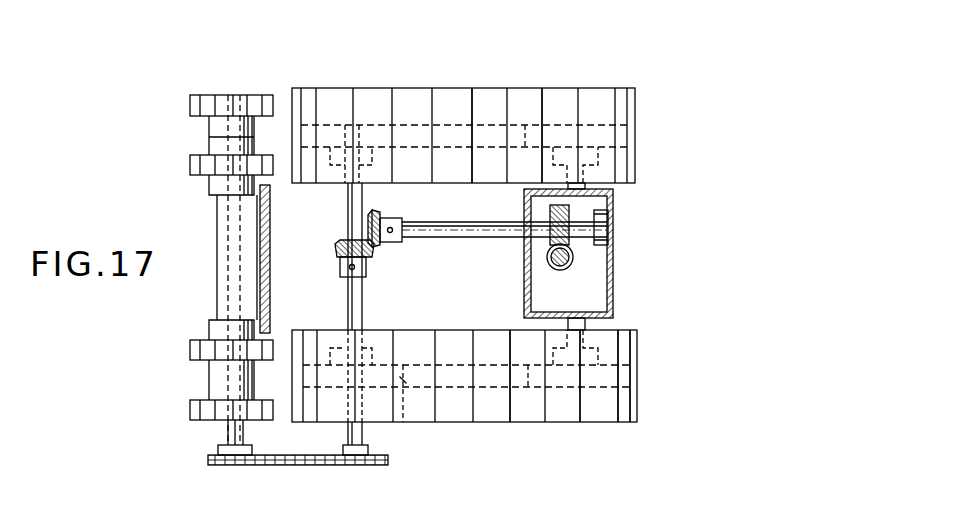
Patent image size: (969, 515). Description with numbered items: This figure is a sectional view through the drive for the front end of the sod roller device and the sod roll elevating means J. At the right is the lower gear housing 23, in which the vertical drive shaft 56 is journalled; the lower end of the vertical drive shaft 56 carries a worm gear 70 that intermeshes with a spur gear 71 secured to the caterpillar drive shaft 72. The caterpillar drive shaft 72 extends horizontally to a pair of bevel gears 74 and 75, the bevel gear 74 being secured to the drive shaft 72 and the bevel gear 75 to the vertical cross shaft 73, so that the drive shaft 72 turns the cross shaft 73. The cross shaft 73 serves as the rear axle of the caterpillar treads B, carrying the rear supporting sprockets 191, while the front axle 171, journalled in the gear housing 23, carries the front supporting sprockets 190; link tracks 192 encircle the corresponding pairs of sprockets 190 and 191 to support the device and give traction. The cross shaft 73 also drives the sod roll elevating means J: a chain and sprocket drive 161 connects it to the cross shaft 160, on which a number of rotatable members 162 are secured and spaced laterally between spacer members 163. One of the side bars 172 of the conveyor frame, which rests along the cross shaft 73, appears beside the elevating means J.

The sod roll elevating means J is at (200, 90).
The rotatable members 162 is at (190, 105).
The spacer members 163 is at (209, 135).
The side bars 172 is at (268, 250).
The cross shaft 160 is at (228, 430).
The chain and sprocket drive 161 is at (332, 465).
The caterpillar treads B is at (600, 88).
The link tracks 192 is at (522, 95).
The rear supporting sprockets 191 is at (410, 422).
The supporting sprockets 190 is at (605, 387).
The cross shaft 73 is at (362, 305).
The bevel gear 75 is at (340, 265).
The bevel gear 74 is at (380, 215).
The caterpillar drive shaft 72 is at (474, 237).
The worm gear 70 is at (548, 258).
The front axle 171 is at (585, 325).
The spur gear 71 is at (562, 208).
The gear housing 23 is at (608, 245).
The vertical drive shaft 56 is at (575, 257).